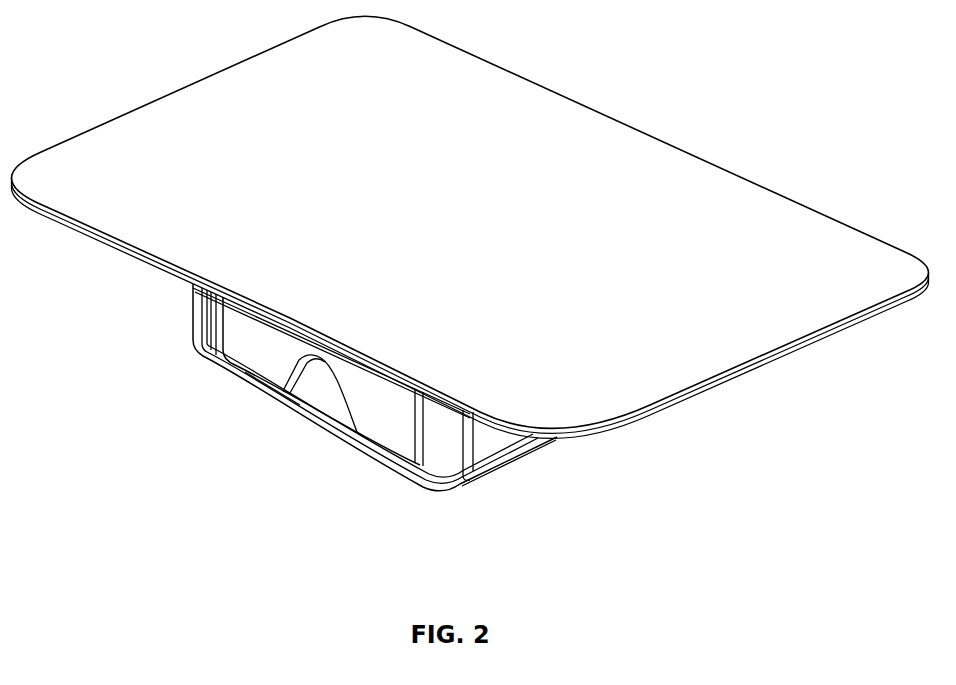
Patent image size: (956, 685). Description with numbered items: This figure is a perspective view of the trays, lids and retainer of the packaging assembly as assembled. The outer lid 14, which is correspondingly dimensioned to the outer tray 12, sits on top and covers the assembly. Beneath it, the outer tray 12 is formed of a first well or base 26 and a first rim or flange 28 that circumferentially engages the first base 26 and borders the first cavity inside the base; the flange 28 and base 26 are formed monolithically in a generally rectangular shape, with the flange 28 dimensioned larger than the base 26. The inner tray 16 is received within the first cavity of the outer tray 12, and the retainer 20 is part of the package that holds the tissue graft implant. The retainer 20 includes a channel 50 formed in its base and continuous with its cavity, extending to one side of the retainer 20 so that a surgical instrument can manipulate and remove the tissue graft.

The outer lid 14 is at (103, 150).
The first rim or flange 28 is at (52, 229).
The outer tray 12 is at (388, 466).
The inner tray 16 is at (219, 340).
The retainer 20 is at (272, 362).
The channel 50 is at (324, 399).
The first well or base 26 is at (492, 467).